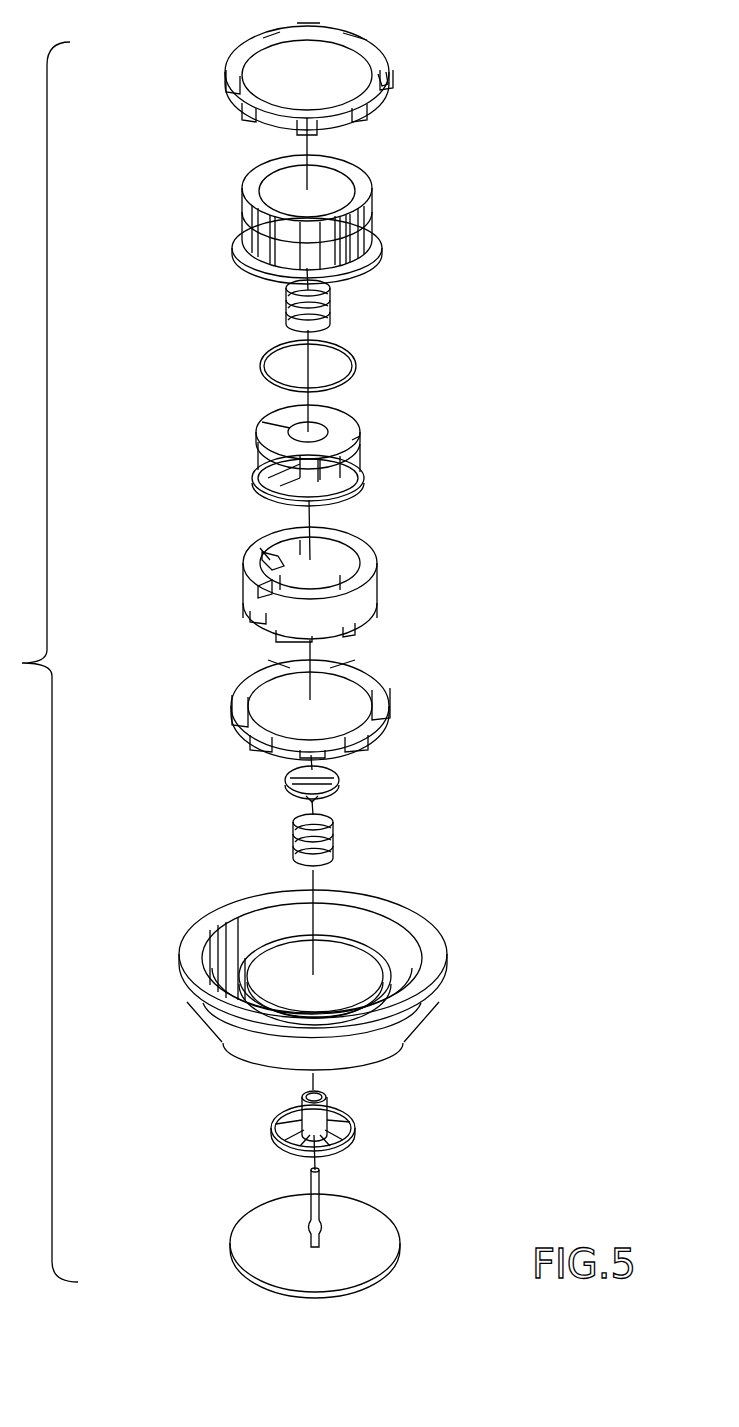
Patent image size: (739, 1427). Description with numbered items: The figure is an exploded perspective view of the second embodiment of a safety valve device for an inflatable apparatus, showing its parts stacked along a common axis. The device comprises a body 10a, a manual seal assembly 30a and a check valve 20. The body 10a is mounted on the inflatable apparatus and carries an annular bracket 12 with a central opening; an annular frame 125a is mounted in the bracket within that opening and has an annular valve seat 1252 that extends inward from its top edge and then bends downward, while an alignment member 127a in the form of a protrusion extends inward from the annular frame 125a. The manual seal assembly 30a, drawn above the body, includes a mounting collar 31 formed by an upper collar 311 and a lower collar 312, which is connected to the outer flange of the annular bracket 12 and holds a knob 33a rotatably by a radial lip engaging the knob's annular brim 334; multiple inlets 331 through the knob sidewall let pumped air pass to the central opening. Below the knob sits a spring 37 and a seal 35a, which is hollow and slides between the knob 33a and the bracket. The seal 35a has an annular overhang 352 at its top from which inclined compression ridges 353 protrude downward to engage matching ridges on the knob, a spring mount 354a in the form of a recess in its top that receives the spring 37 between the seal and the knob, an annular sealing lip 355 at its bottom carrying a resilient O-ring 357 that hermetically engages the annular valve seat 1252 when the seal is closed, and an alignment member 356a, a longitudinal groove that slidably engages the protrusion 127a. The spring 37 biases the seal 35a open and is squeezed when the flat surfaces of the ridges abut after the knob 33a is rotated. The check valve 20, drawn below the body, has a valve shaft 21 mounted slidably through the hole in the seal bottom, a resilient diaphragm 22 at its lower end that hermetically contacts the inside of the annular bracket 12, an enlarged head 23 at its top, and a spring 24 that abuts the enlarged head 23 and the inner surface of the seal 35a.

The manual seal assembly 30a is at (160, 42).
The mounting collar 31 is at (386, 52).
The upper collar 311 is at (388, 70).
The knob 33a is at (363, 178).
The inlets 331 is at (357, 240).
The annular brim 334 is at (368, 250).
The spring 37 is at (330, 306).
The O-ring 357 is at (358, 370).
The annular overhang 352 is at (360, 425).
The spring mount 354a is at (290, 428).
The compression ridges 353 is at (357, 450).
The annular sealing lip 355 is at (350, 493).
The alignment member 356a is at (302, 480).
The seal 35a is at (331, 471).
The annular frame 125a is at (335, 584).
The annular valve seat 1252 is at (268, 560).
The alignment member 127a is at (262, 590).
The lower collar 312 is at (385, 688).
The enlarged head 23 is at (340, 782).
The spring 24 is at (333, 850).
The annular bracket 12 is at (377, 952).
The body 10a is at (362, 982).
The valve shaft 21 is at (358, 1138).
The check valve 20 is at (315, 1169).
The diaphragm 22 is at (387, 1262).